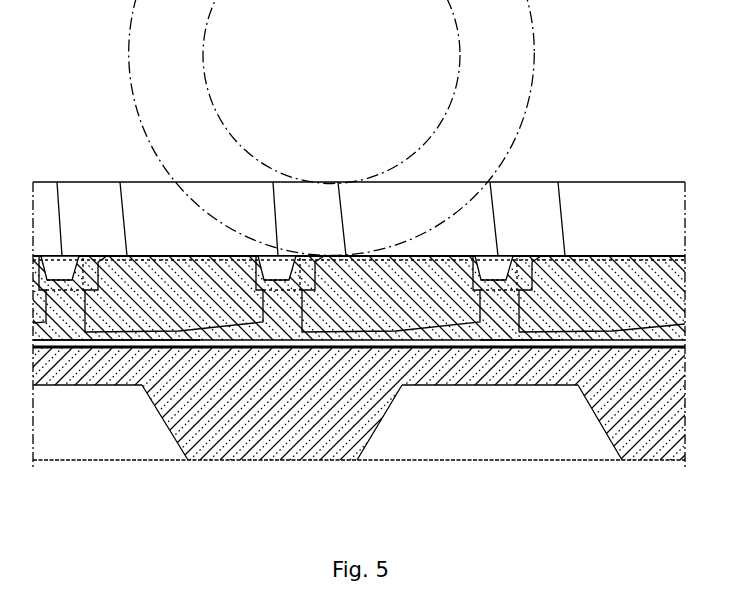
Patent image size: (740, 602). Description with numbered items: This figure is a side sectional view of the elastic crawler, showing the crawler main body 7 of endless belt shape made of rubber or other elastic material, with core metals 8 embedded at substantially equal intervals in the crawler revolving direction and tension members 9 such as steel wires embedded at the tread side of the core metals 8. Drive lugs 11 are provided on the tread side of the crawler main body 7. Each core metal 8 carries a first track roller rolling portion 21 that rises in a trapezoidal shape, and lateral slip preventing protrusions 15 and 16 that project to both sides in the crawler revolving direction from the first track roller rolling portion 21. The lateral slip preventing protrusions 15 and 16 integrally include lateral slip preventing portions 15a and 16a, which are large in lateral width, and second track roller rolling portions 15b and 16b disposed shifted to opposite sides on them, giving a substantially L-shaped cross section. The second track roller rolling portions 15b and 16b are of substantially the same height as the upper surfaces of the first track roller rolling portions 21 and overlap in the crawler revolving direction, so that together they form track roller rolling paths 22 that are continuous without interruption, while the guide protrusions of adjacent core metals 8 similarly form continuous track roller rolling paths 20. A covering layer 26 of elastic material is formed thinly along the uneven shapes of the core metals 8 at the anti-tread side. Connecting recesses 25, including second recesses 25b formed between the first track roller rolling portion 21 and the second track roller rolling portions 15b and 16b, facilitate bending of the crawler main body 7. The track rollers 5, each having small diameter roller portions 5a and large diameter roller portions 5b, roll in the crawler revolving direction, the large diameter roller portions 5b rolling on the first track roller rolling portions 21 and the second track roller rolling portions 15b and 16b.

The track roller 5 is at (122, 48).
The small diameter roller portion 5a is at (205, 58).
The large diameter roller portion 5b is at (535, 68).
The crawler main body 7 is at (122, 463).
The core metal 8 is at (88, 338).
The tension member 9 is at (133, 341).
The drive lug 11 is at (270, 440).
The lateral slip preventing protrusion 15 is at (490, 348).
The lateral slip preventing portion 15a is at (512, 341).
The second track roller rolling portion 15b is at (503, 256).
The lateral slip preventing protrusion 16 is at (447, 341).
The lateral slip preventing portion 16a is at (432, 348).
The second track roller rolling portion 16b is at (343, 257).
The track roller rolling path 20 is at (522, 174).
The first track roller rolling portion 21 is at (143, 278).
The track roller rolling path 22 is at (149, 252).
The connecting recess 25 is at (264, 257).
The second recess 25b is at (281, 256).
The covering layer 26 is at (168, 258).